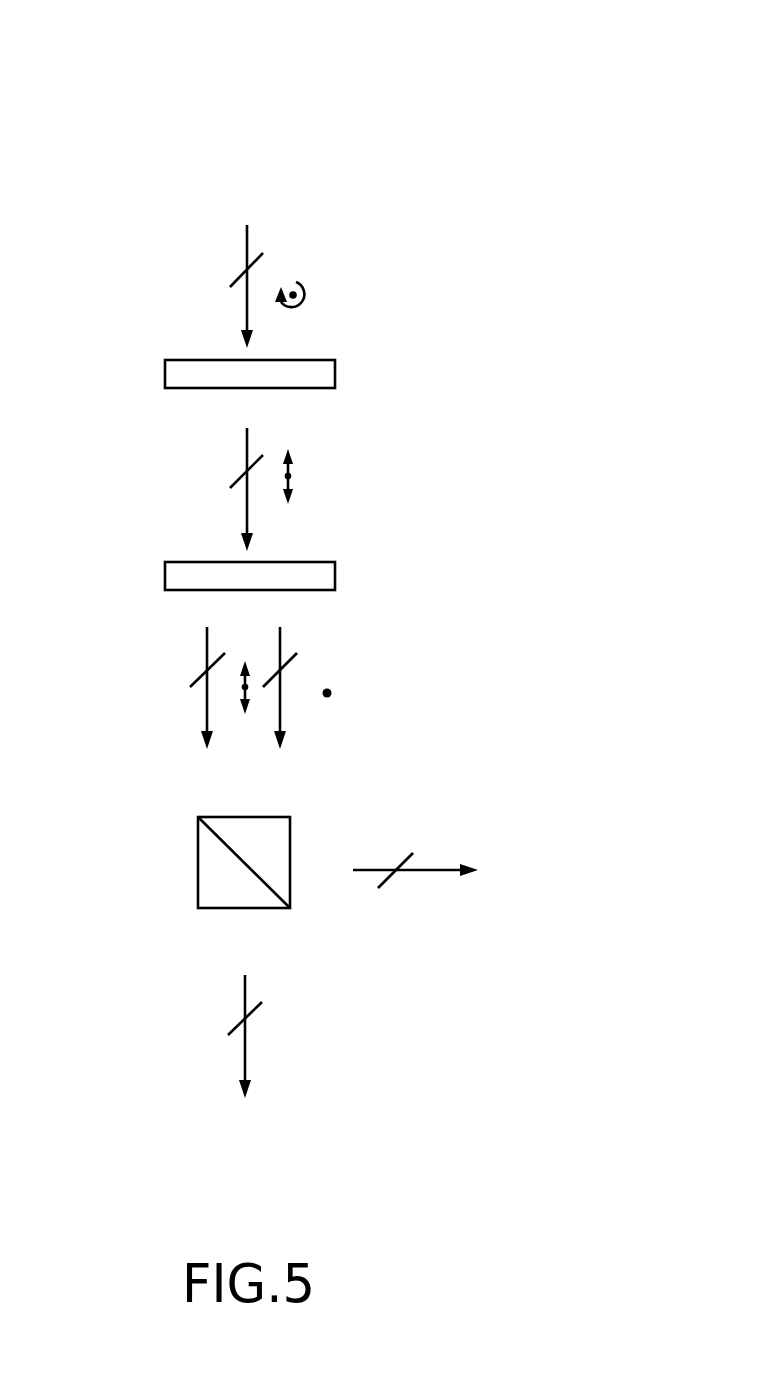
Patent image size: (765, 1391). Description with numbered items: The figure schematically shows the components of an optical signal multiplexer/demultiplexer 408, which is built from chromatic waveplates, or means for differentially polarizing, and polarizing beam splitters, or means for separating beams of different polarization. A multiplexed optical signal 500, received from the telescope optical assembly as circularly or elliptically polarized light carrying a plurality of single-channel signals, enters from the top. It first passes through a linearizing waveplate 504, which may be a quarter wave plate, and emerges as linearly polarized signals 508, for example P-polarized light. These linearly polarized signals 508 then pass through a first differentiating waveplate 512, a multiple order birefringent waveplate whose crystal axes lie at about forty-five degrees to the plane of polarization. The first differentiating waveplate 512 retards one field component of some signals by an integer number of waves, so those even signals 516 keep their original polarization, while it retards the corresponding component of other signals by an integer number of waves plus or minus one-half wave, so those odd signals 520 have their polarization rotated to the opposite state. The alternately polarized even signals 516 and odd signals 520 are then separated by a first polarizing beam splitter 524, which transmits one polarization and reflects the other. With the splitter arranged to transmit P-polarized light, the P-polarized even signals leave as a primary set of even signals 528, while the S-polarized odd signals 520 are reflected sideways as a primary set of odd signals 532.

The optical signal multiplexer/demultiplexer 408 is at (508, 122).
The multiplexed optical signal 500 is at (249, 234).
The linearizing waveplate 504 is at (165, 371).
The linearly polarized signals 508 is at (249, 438).
The first differentiating waveplate 512 is at (165, 573).
The even signals 516 is at (207, 636).
The odd signals 520 is at (282, 641).
The first polarizing beam splitter 524 is at (198, 860).
The primary set of even signals 528 is at (245, 990).
The primary set of odd signals 532 is at (420, 872).